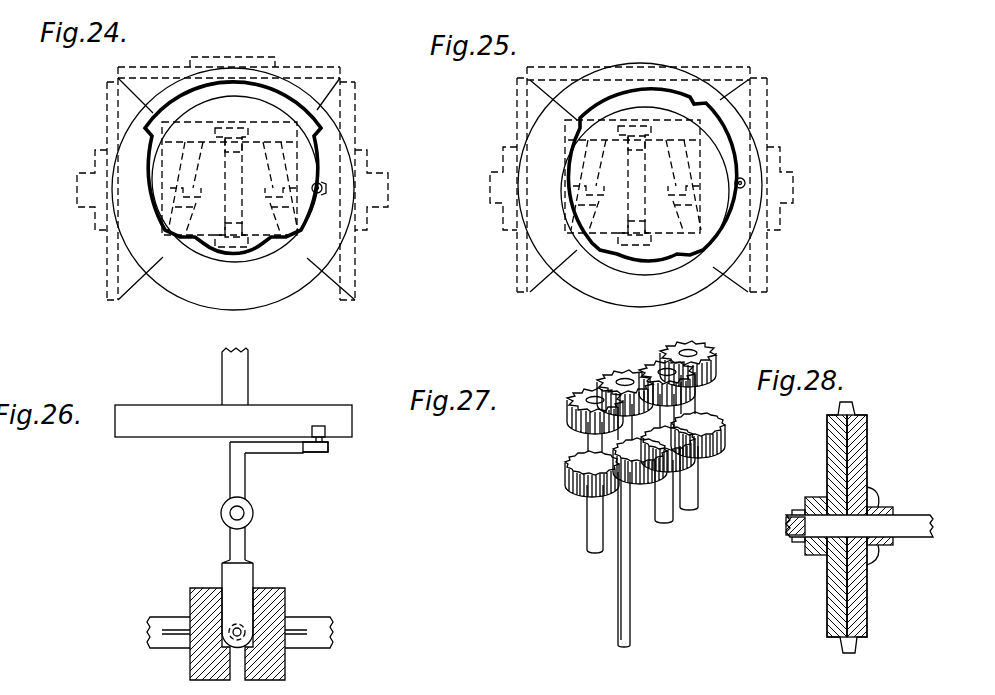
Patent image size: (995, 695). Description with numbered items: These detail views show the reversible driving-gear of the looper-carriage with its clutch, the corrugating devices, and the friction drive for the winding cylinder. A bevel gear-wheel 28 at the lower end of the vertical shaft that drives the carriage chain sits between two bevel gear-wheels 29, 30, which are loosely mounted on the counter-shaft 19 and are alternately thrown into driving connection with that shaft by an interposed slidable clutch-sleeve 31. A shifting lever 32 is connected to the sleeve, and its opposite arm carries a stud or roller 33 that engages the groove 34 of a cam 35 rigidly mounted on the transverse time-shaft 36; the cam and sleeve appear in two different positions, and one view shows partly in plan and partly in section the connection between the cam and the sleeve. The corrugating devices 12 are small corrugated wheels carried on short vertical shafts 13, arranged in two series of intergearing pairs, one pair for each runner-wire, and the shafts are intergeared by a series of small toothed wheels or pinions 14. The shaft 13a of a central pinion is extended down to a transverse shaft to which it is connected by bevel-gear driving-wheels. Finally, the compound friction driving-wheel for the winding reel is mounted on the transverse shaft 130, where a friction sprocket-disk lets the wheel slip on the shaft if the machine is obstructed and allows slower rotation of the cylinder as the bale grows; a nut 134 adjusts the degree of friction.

In FIG. 27, the corrugating devices 12 is at (716, 438).
In FIG. 27, the short vertical shafts 13 is at (690, 414).
In FIG. 27, the shaft of central pinion 13a is at (630, 568).
In FIG. 28, the shaft of central pinion 13a is at (853, 457).
In FIG. 27, the small toothed wheels or pinions 14 is at (597, 389).
In FIG. 26, the counter-shaft 19 is at (308, 623).
In FIG. 24, the bevel gear-wheel 28 is at (298, 72).
In FIG. 25, the bevel gear-wheel 28 is at (703, 73).
In FIG. 24, the bevel gear-wheel 29 is at (108, 105).
In FIG. 25, the bevel gear-wheel 29 is at (529, 108).
In FIG. 24, the bevel gear-wheel 30 is at (347, 115).
In FIG. 25, the bevel gear-wheel 30 is at (767, 108).
In FIG. 24, the slidable clutch-sleeve 31 is at (190, 249).
In FIG. 25, the slidable clutch-sleeve 31 is at (583, 282).
In FIG. 26, the slidable clutch-sleeve 31 is at (190, 597).
In FIG. 24, the shifting lever 32 is at (226, 252).
In FIG. 25, the shifting lever 32 is at (620, 284).
In FIG. 26, the shifting lever 32 is at (240, 583).
In FIG. 24, the stud or roller 33 is at (355, 250).
In FIG. 25, the stud or roller 33 is at (765, 227).
In FIG. 26, the stud or roller 33 is at (320, 453).
In FIG. 24, the groove 34 is at (313, 162).
In FIG. 25, the groove 34 is at (673, 268).
In FIG. 24, the cam 35 is at (235, 196).
In FIG. 25, the cam 35 is at (635, 191).
In FIG. 26, the cam 35 is at (233, 421).
In FIG. 26, the time-shaft 36 is at (242, 365).
In FIG. 28, the transverse shaft 130 is at (870, 510).
In FIG. 28, the nut 134 is at (824, 525).